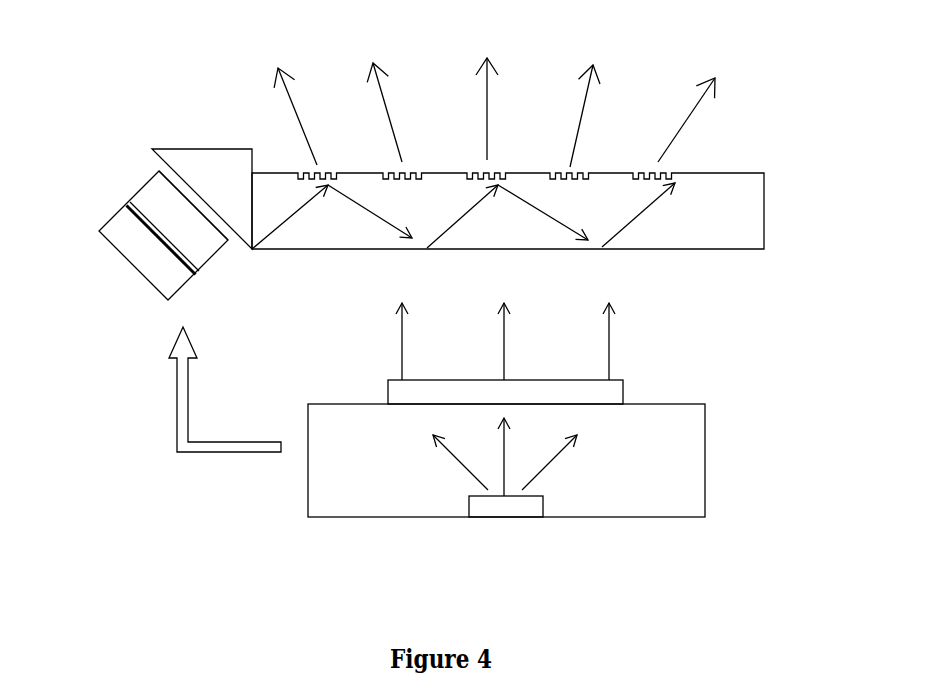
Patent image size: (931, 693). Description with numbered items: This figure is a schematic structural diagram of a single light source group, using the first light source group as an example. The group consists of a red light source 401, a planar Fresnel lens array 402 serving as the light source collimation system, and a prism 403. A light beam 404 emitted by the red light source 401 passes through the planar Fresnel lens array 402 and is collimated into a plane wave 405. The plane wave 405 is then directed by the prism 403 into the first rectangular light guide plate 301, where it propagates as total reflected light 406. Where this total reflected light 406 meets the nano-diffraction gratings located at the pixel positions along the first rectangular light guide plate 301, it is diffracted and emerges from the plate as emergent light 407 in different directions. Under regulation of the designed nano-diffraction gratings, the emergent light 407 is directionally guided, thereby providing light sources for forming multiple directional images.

The first rectangular light guide plate 301 is at (728, 205).
The red light source 401 is at (137, 257).
The planar Fresnel lens array 402 is at (175, 193).
The prism 403 is at (218, 172).
The light beam 404 is at (468, 473).
The plane wave 405 is at (609, 333).
The total reflected light 406 is at (630, 217).
The emergent light 407 is at (496, 83).